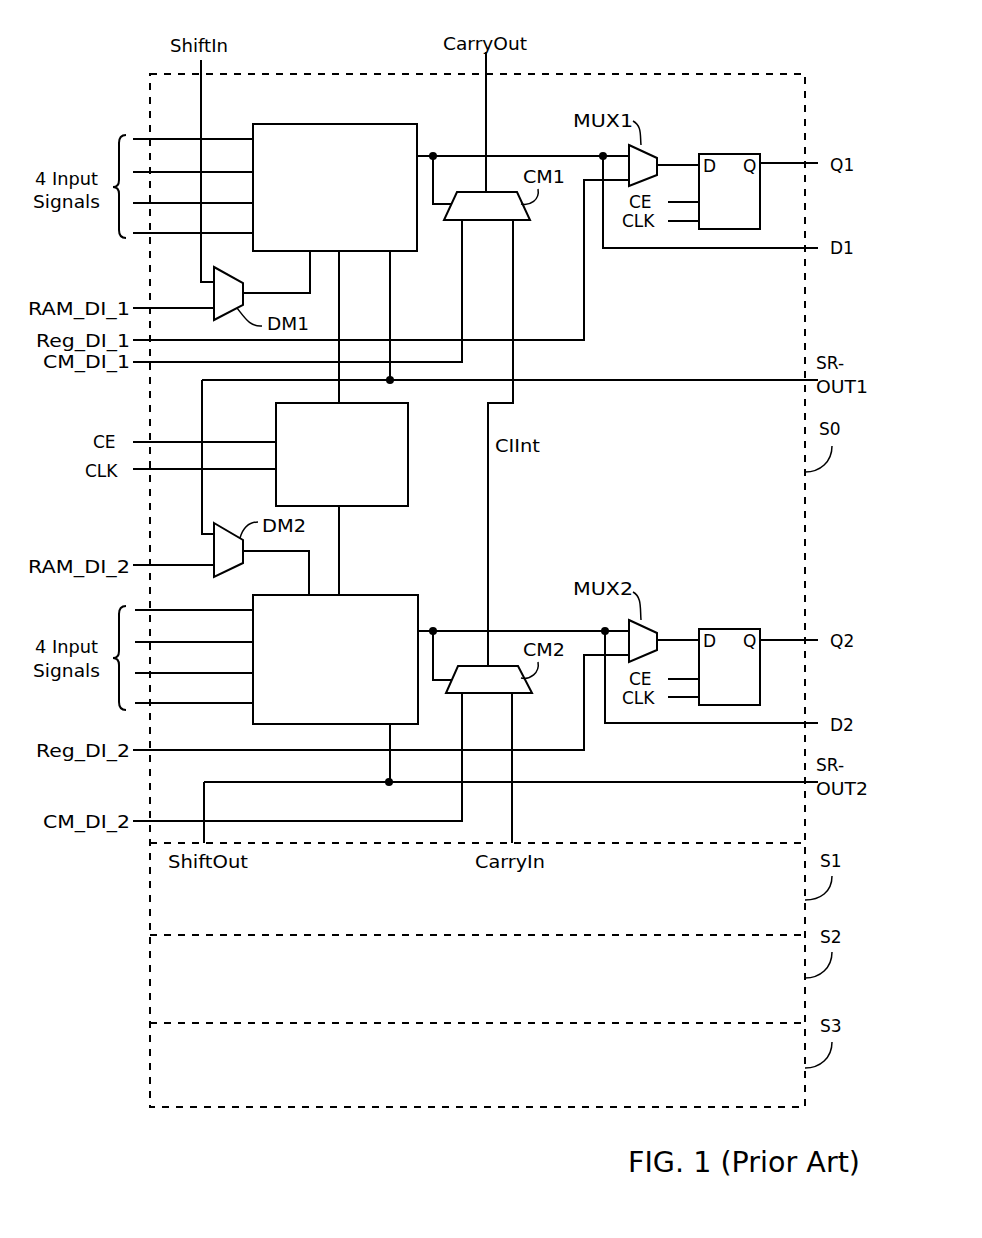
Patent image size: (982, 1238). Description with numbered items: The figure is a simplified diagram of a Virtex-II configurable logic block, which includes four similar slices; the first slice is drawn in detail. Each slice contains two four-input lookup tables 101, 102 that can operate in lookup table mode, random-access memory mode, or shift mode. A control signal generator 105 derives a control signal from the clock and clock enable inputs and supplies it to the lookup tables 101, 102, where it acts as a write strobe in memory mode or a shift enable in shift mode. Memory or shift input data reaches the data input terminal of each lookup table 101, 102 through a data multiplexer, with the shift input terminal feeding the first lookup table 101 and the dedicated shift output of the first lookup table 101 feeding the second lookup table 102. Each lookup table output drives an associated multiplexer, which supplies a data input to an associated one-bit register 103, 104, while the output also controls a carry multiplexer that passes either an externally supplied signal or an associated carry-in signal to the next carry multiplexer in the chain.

The lookup table 101 is at (345, 205).
The lookup table 102 is at (345, 689).
The register 103 is at (707, 154).
The register 104 is at (733, 629).
The control signal generator 105 is at (357, 499).